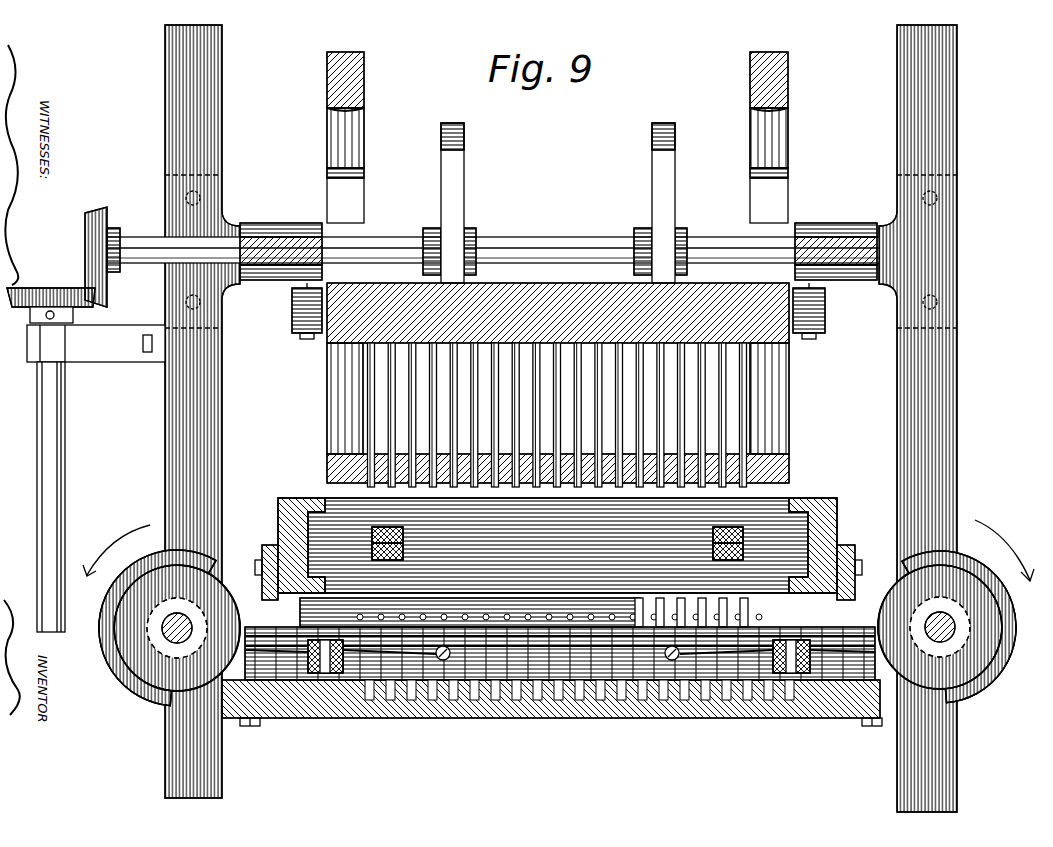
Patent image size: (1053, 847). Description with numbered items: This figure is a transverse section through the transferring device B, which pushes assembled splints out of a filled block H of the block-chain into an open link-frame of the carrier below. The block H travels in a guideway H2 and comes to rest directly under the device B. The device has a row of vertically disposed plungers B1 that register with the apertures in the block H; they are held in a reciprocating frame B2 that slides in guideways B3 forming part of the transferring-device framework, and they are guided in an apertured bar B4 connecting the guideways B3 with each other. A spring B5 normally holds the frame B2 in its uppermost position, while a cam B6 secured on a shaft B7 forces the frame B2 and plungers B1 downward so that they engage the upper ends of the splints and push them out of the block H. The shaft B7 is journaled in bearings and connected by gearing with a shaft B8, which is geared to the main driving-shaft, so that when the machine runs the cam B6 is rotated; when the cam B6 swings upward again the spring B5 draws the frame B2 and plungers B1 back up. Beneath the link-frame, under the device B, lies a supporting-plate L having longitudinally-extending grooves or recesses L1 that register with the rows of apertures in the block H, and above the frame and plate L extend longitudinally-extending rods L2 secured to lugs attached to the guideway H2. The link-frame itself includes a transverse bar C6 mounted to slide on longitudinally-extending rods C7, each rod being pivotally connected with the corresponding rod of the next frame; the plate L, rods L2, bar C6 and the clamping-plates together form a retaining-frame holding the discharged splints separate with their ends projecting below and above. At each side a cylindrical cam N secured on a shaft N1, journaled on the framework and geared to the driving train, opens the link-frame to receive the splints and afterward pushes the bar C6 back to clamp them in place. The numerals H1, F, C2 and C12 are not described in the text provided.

The transferring device B is at (561, 418).
The plungers B1 is at (730, 410).
The reciprocating frame B2 is at (353, 330).
The guideways B3 is at (352, 152).
The apertured bar B4 is at (340, 466).
The spring B5 is at (292, 315).
The cam B6 is at (447, 212).
The shaft B7 is at (596, 224).
The shaft B8 is at (42, 470).
The block H is at (558, 545).
The block H1 is at (408, 532).
The guideway H2 is at (290, 508).
The supporting-plate L is at (560, 703).
The grooves or recesses L1 is at (470, 683).
The rods L2 is at (648, 600).
The bracket F is at (558, 585).
The foot screw C2 is at (254, 726).
The transverse bar C6 is at (832, 680).
The rods C7 is at (326, 675).
The rod C12 is at (878, 703).
The cylindrical cam N is at (558, 597).
The shaft N1 is at (150, 700).